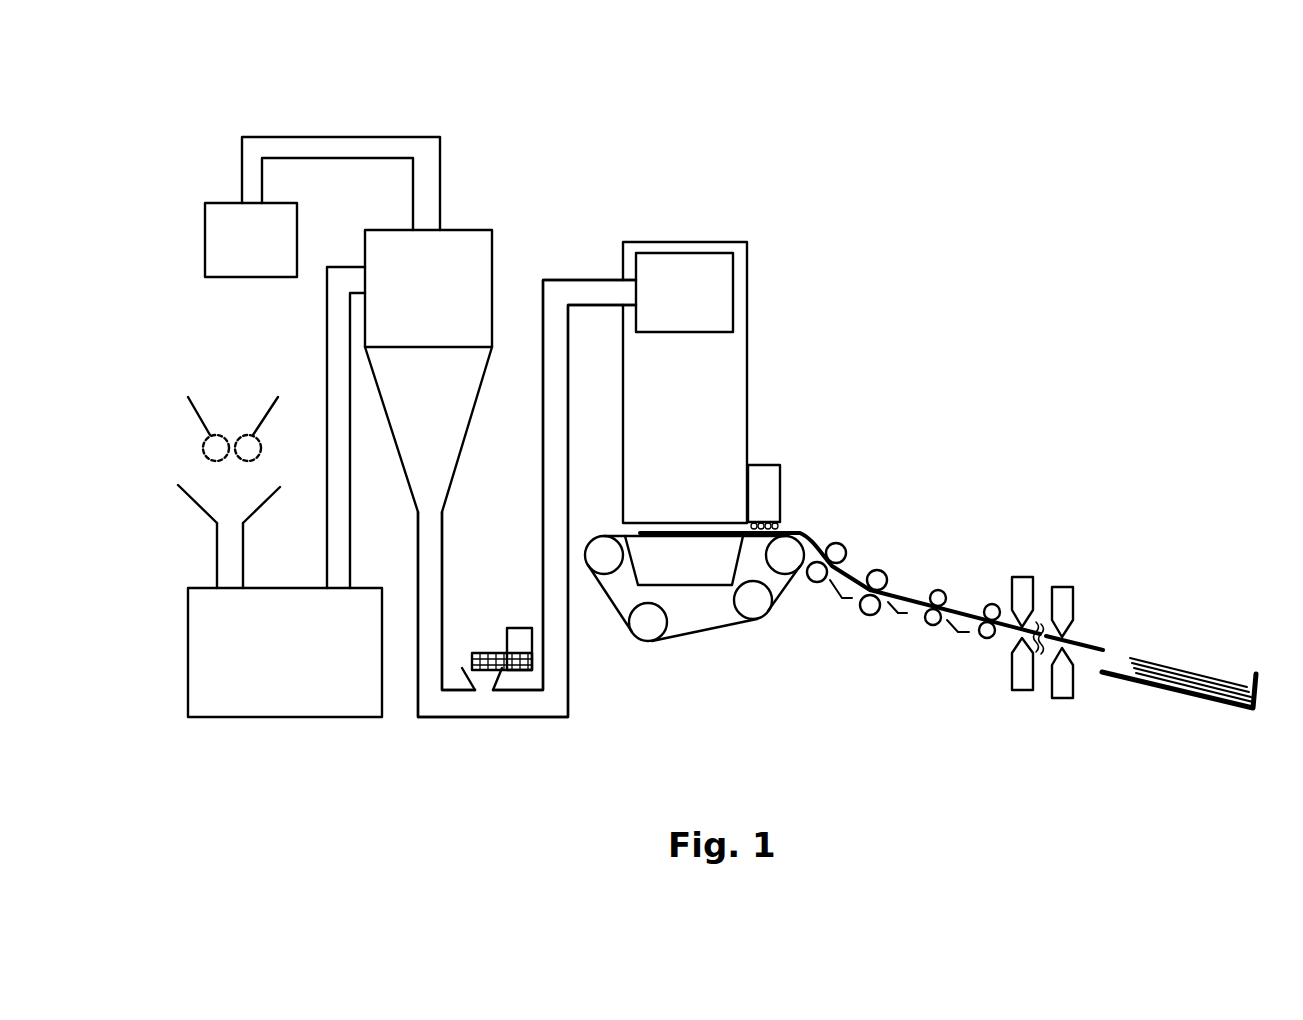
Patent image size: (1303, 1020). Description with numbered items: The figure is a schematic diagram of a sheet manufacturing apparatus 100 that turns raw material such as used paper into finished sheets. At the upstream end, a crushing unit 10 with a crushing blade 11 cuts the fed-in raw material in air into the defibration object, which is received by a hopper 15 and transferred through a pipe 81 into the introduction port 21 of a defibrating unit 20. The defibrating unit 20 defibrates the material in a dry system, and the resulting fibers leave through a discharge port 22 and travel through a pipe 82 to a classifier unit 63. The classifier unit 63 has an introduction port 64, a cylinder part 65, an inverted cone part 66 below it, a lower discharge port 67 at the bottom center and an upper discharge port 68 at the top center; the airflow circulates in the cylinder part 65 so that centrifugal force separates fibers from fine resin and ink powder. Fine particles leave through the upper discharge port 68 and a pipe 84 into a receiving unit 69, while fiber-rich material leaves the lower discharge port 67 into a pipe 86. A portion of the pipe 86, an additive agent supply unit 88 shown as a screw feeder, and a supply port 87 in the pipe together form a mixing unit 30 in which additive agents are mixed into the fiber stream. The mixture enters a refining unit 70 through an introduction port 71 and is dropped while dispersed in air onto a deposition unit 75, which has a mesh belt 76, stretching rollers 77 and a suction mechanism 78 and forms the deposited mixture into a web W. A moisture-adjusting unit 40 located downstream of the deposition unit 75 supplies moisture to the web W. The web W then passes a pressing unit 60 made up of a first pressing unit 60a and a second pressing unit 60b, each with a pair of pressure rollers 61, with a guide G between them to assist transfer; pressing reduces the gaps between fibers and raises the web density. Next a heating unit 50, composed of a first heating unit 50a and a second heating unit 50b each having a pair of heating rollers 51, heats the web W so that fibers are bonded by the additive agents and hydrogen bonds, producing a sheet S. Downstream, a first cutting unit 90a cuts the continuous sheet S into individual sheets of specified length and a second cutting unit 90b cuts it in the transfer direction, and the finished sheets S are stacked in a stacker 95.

The sheet manufacturing apparatus 100 is at (993, 176).
The crushing unit 10 is at (215, 471).
The crushing blade 11 is at (215, 448).
The hopper 15 is at (210, 507).
The pipe 81 is at (230, 549).
The defibrating unit 20 is at (285, 671).
The introduction port 21 is at (231, 590).
The discharge port 22 is at (342, 590).
The pipe 82 is at (337, 302).
The classifier unit 63 is at (457, 348).
The introduction port 64 is at (366, 284).
The cylinder part 65 is at (456, 298).
The inverted cone part 66 is at (433, 413).
The lower discharge port 67 is at (425, 510).
The upper discharge port 68 is at (427, 232).
The receiving unit 69 is at (228, 243).
The pipe 84 is at (341, 150).
The mixing unit 30 is at (527, 498).
The pipe 86 is at (578, 290).
The supply port 87 is at (484, 692).
The additive agent supply unit 88 is at (515, 640).
The refining unit 70 is at (713, 366).
The introduction port 71 is at (638, 291).
The moisture-adjusting unit 40 is at (775, 463).
The deposition unit 75 is at (689, 598).
The mesh belt 76 is at (730, 628).
The stretching rollers 77 is at (604, 560).
The suction mechanism 78 is at (689, 565).
The web W is at (806, 532).
The pressing unit 60 is at (879, 568).
The first pressing unit 60a is at (859, 581).
The second pressing unit 60b is at (920, 547).
The pressure rollers 61 is at (836, 548).
The guide G is at (843, 602).
The heating unit 50 is at (987, 597).
The first heating unit 50a is at (949, 585).
The second heating unit 50b is at (1028, 571).
The heating rollers 51 is at (937, 594).
The first cutting unit 90a is at (1024, 693).
The second cutting unit 90b is at (1076, 700).
The stacker 95 is at (1175, 694).
The sheet S is at (1088, 634).